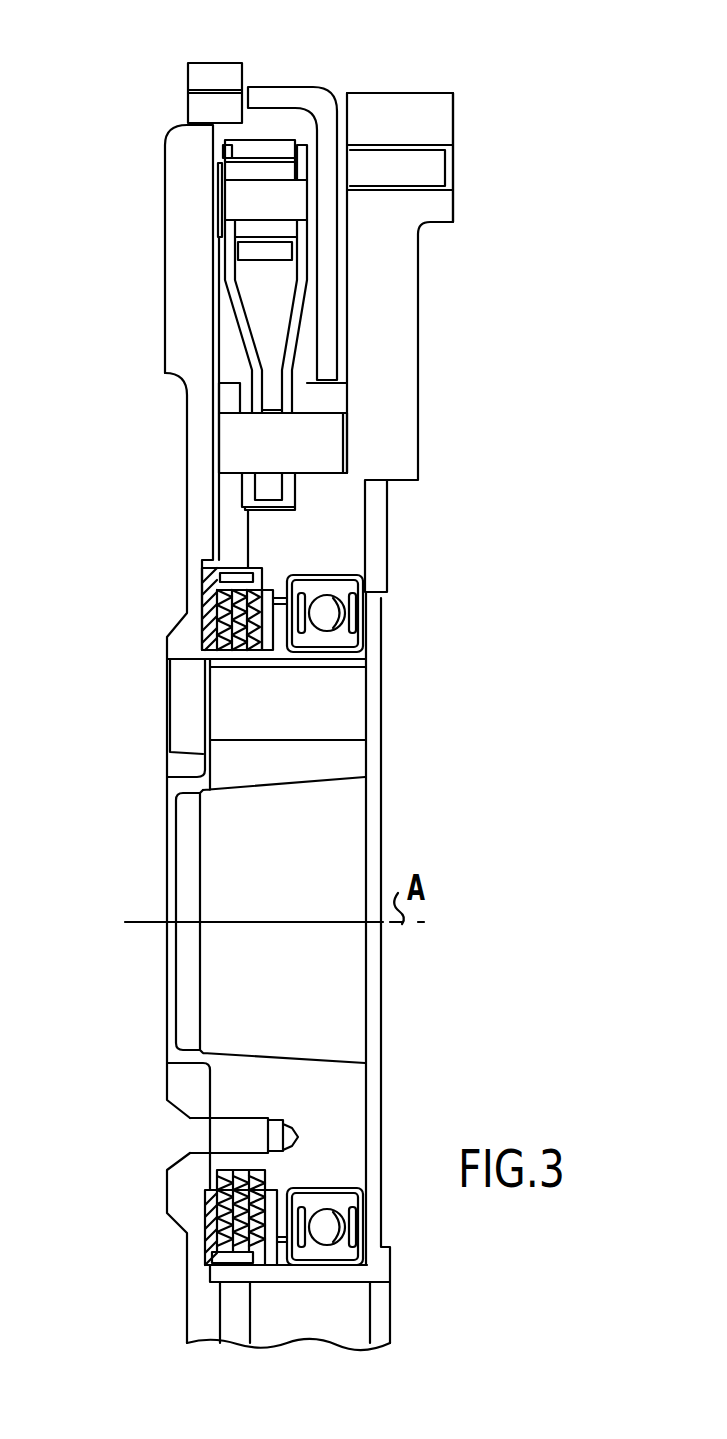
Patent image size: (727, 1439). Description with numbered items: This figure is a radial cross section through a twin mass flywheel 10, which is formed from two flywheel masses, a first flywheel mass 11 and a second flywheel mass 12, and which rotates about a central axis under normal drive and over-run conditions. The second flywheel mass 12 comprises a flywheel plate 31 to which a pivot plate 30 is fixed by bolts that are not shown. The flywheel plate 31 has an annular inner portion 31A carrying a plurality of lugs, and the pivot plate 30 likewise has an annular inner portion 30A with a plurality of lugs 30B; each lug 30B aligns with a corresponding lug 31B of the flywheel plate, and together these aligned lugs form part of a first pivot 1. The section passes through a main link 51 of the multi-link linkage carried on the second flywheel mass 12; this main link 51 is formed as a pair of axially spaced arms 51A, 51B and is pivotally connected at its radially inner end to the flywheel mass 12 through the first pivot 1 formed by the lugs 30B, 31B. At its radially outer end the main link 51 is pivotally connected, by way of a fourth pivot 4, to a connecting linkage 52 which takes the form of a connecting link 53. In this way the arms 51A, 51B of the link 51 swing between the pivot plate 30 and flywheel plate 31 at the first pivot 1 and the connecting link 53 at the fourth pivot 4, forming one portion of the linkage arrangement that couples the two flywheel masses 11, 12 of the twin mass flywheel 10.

The first pivot 1 is at (207, 384).
The fourth pivot 4 is at (207, 172).
The twin mass flywheel 10 is at (466, 101).
The flywheel mass 11 is at (178, 228).
The second flywheel mass 12 is at (442, 210).
The pivot plate 30 is at (230, 497).
The annular inner portion 30A is at (230, 541).
The lug 30B is at (230, 402).
The flywheel plate 31 is at (420, 272).
The annular inner portion 31A is at (342, 532).
The lug 31B is at (308, 395).
The main link 51 is at (237, 331).
The arm 51A is at (305, 150).
The arm 51B is at (227, 155).
The connecting linkage 52 is at (254, 156).
The connecting link 53 is at (233, 147).